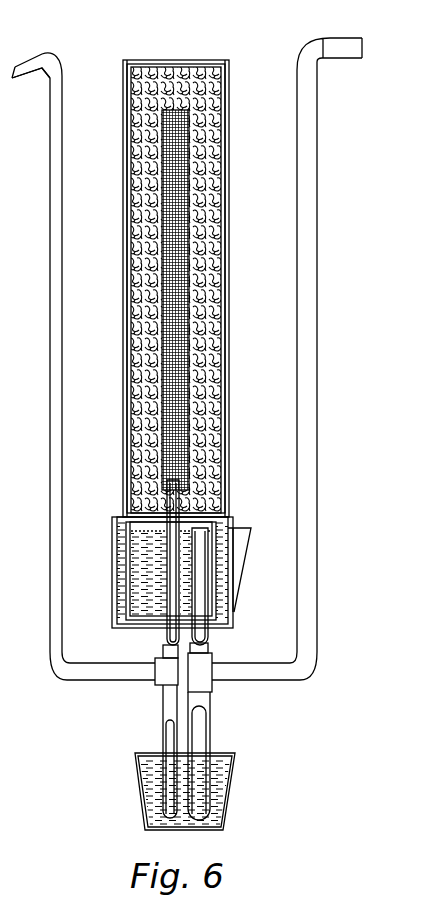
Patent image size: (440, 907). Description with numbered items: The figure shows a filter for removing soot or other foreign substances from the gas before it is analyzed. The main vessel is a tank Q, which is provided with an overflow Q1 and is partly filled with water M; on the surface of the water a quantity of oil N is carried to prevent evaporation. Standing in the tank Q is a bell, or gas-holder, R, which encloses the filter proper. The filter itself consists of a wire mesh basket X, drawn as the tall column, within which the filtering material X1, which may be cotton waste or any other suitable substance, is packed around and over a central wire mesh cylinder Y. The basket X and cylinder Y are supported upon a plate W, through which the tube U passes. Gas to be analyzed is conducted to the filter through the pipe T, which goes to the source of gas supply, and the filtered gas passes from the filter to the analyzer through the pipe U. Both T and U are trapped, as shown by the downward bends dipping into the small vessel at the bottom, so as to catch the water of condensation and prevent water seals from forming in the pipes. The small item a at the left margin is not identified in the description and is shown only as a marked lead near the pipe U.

The filtering material X1 is at (207, 62).
The wire mesh basket X is at (221, 182).
The wire mesh cylinder Y is at (216, 118).
The bell R is at (236, 274).
The packing material W is at (143, 489).
The space below packing N is at (153, 521).
The water M is at (118, 587).
The tank Q is at (233, 620).
The overflow Q1 is at (250, 516).
The pipe U is at (48, 557).
The pipe T is at (321, 578).
The nozzle a is at (25, 202).